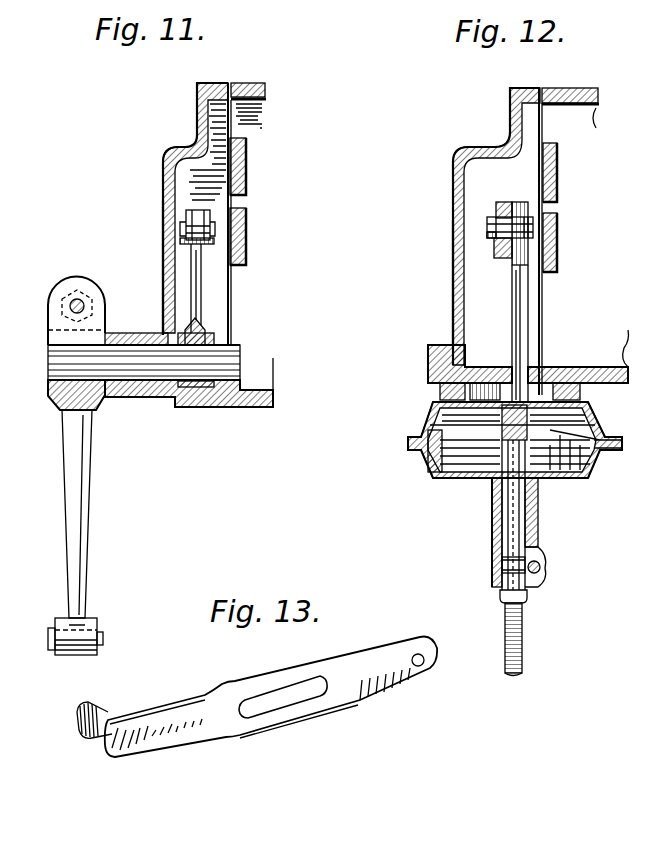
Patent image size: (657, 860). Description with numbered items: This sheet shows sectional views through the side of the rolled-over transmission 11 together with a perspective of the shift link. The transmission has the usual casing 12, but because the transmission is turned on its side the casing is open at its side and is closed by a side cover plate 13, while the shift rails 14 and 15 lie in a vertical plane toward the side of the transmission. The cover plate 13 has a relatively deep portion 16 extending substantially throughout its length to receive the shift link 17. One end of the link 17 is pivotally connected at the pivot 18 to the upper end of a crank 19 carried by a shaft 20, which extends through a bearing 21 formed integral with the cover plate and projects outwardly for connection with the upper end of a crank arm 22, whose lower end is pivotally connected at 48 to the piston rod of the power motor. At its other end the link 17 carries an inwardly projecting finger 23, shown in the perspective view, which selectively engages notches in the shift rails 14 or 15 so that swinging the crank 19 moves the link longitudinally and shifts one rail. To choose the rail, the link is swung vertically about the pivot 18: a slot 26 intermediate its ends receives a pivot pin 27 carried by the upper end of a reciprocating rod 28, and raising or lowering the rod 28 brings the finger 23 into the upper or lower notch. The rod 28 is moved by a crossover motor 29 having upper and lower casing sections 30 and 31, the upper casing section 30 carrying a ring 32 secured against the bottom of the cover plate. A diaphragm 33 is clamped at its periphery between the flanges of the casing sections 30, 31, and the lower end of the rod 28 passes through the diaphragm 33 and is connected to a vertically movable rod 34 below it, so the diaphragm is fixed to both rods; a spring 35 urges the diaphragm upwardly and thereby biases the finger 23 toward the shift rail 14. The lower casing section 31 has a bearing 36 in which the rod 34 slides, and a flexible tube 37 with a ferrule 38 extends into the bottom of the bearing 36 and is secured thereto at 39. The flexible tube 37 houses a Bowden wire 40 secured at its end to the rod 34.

In FIG. 11, the transmission 11 is at (244, 80).
In FIG. 12, the transmission 11 is at (556, 88).
In FIG. 11, the casing 12 is at (262, 84).
In FIG. 12, the casing 12 is at (594, 88).
In FIG. 11, the side cover plate 13 is at (197, 105).
In FIG. 12, the side cover plate 13 is at (510, 103).
In FIG. 11, the shift rail 14 is at (249, 162).
In FIG. 12, the shift rail 14 is at (560, 188).
In FIG. 11, the shift rail 15 is at (249, 242).
In FIG. 12, the shift rail 15 is at (560, 248).
In FIG. 11, the deep portion 16 is at (163, 156).
In FIG. 12, the deep portion 16 is at (453, 196).
In FIG. 11, the shift link 17 is at (182, 208).
In FIG. 12, the shift link 17 is at (508, 200).
In FIG. 13, the shift link 17 is at (372, 646).
In FIG. 11, the pivot 18 is at (182, 234).
In FIG. 11, the crank 19 is at (200, 290).
In FIG. 11, the shaft 20 is at (240, 356).
In FIG. 11, the bearing 21 is at (138, 325).
In FIG. 11, the crank arm 22 is at (62, 461).
In FIG. 13, the finger 23 is at (108, 702).
In FIG. 12, the slot 26 is at (500, 216).
In FIG. 13, the slot 26 is at (284, 680).
In FIG. 12, the pivot pin 27 is at (487, 228).
In FIG. 12, the reciprocating rod 28 is at (512, 306).
In FIG. 12, the crossover motor 29 is at (433, 408).
In FIG. 12, the upper casing section 30 is at (432, 424).
In FIG. 12, the lower casing section 31 is at (430, 458).
In FIG. 12, the ring 32 is at (580, 393).
In FIG. 12, the diaphragm 33 is at (610, 440).
In FIG. 12, the vertically movable rod 34 is at (502, 497).
In FIG. 12, the spring 35 is at (572, 478).
In FIG. 12, the bearing 36 is at (492, 521).
In FIG. 12, the flexible tube 37 is at (522, 640).
In FIG. 12, the ferrule 38 is at (527, 596).
In FIG. 12, the securing means 39 is at (545, 568).
In FIG. 12, the Bowden wire 40 is at (502, 544).
In FIG. 11, the pivotal connection 48 is at (49, 643).